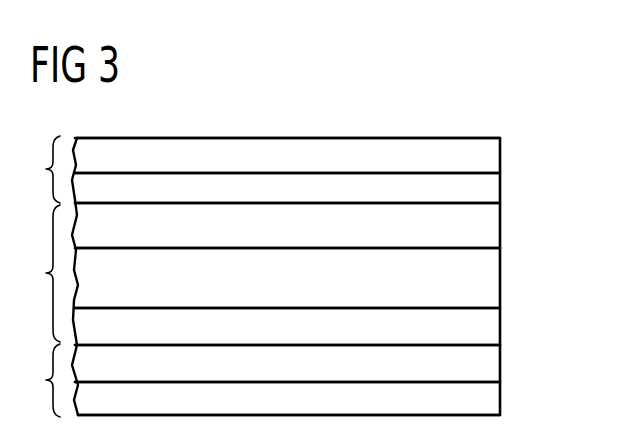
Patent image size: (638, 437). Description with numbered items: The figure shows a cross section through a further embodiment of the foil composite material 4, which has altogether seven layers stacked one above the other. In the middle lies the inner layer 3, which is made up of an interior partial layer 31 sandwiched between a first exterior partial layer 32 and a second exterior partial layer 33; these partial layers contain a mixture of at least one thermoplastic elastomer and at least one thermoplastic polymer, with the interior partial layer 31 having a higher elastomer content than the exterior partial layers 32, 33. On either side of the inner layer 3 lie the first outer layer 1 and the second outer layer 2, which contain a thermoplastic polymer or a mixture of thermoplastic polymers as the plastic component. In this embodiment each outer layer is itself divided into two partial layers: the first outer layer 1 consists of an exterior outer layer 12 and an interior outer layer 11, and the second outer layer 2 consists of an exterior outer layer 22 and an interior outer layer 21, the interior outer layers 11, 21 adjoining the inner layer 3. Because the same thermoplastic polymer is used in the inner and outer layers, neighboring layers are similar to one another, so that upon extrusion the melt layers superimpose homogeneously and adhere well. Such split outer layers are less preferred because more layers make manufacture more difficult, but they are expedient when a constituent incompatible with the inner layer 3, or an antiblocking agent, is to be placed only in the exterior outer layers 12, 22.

The first outer plastic layer 1 is at (45, 169).
The second outer plastic layer 2 is at (42, 380).
The inner layer 3 is at (42, 273).
The foil composite material 4 is at (466, 131).
The interior outer layer 11 is at (493, 191).
The exterior outer layer 12 is at (493, 149).
The interior outer layer 21 is at (490, 359).
The exterior outer layer 22 is at (490, 398).
The interior partial layer 31 is at (493, 271).
The first exterior partial layer 32 is at (493, 225).
The second exterior partial layer 33 is at (490, 320).